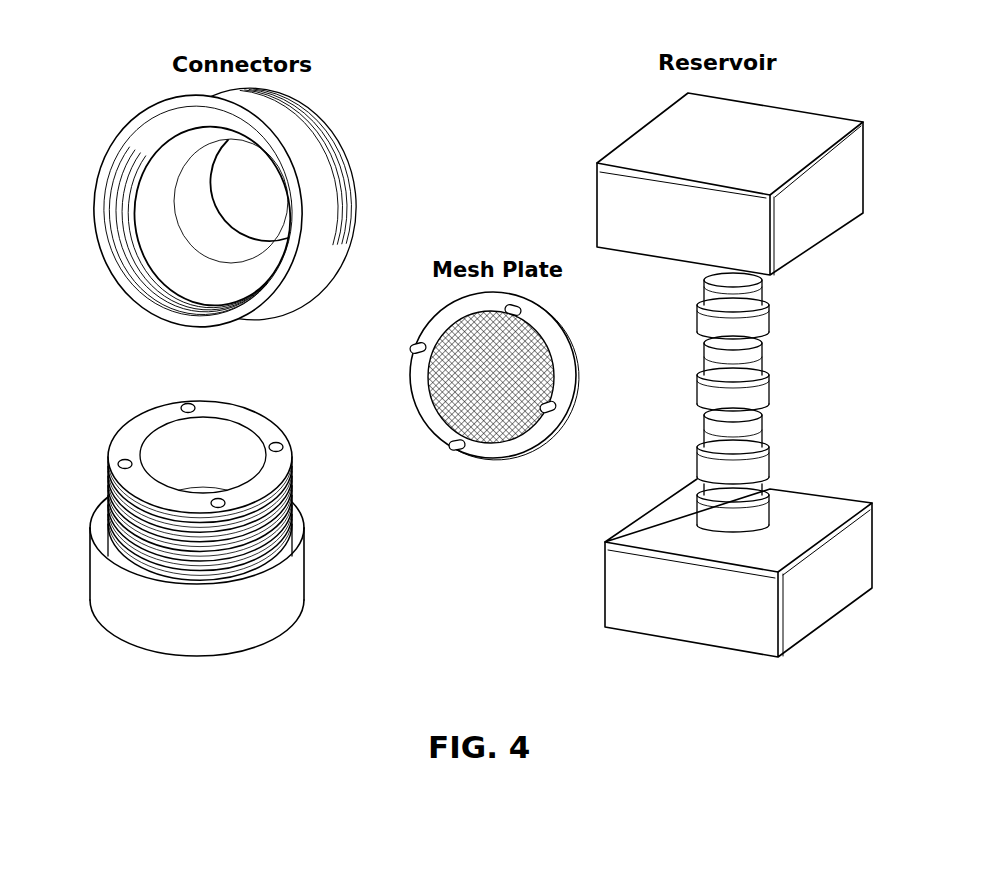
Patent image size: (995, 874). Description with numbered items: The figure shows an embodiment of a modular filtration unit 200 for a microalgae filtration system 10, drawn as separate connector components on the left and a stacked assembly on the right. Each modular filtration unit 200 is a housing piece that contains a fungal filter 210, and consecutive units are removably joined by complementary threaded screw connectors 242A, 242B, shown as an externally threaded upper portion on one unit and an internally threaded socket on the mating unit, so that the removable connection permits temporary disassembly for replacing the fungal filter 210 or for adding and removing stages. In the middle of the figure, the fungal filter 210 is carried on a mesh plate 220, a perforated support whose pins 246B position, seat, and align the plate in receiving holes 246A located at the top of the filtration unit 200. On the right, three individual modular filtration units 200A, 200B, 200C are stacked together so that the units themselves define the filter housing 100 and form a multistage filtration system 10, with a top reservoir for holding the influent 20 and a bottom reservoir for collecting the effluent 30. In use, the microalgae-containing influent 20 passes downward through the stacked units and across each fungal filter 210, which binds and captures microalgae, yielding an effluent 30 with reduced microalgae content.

The microalgae filtration system 10 is at (752, 362).
The filter housing 100 is at (752, 362).
The influent feed stream 20 is at (810, 128).
The effluent product stream 30 is at (848, 590).
The modular filtration unit 200 is at (465, 364).
The first modular filtration unit 200A is at (767, 306).
The second modular filtration unit 200B is at (767, 373).
The third modular filtration unit 200C is at (767, 446).
The threaded screw connector 242A is at (292, 506).
The threaded screw connector 242B is at (135, 267).
The receiving holes 246A is at (185, 402).
The pins 246B is at (414, 343).
The fungal filter 210 is at (476, 427).
The mesh plate 220 is at (545, 422).